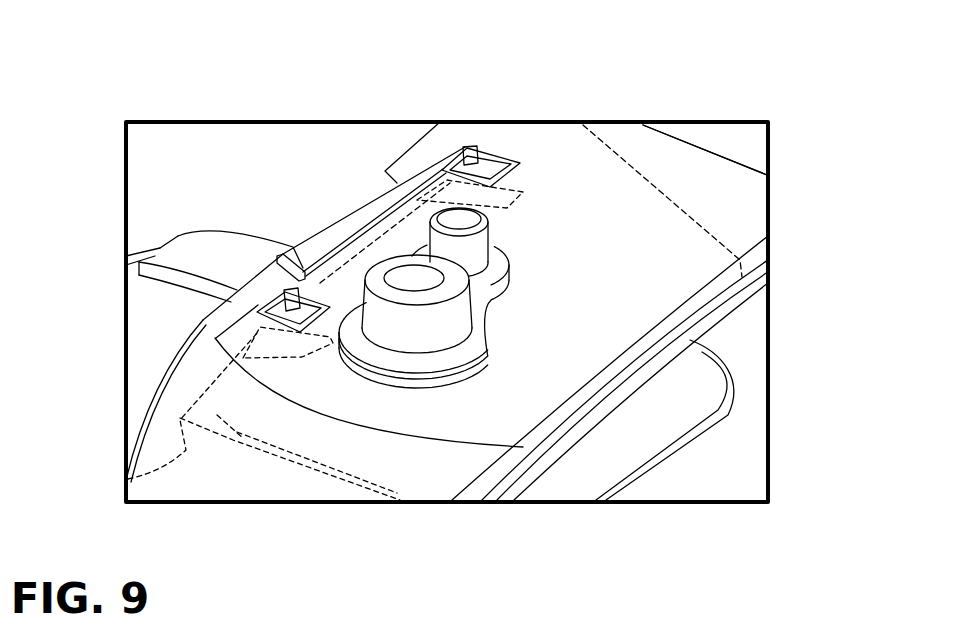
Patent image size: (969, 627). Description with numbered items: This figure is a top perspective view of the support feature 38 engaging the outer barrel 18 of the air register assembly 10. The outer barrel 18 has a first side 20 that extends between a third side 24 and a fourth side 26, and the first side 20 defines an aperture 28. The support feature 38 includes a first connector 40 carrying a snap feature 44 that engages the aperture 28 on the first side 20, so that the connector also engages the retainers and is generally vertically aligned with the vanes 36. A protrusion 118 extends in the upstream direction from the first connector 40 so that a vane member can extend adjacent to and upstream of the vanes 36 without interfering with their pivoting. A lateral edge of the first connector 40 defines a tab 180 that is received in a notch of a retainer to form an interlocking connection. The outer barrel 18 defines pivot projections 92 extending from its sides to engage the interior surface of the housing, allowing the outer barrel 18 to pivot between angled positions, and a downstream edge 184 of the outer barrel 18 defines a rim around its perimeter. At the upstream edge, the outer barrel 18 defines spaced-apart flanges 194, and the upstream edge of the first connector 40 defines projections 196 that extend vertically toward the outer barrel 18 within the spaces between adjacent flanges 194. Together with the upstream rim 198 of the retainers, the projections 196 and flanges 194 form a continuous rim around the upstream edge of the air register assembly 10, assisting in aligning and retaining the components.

The air register assembly 10 is at (748, 98).
The outer barrel 18 is at (745, 151).
The first side 20 is at (627, 190).
The third side 24 is at (297, 487).
The fourth side 26 is at (720, 137).
The aperture 28 is at (371, 166).
The vanes 36 is at (630, 465).
The support feature 38 is at (222, 214).
The first connector 40 is at (128, 479).
The snap feature 44 is at (293, 290).
The pivot projections 92 is at (463, 253).
The protrusion 118 is at (189, 250).
The tab 180 is at (235, 430).
The downstream edge 184 is at (745, 292).
The flanges 194 is at (170, 300).
The projections 196 is at (323, 280).
The upstream rim 198 is at (148, 413).